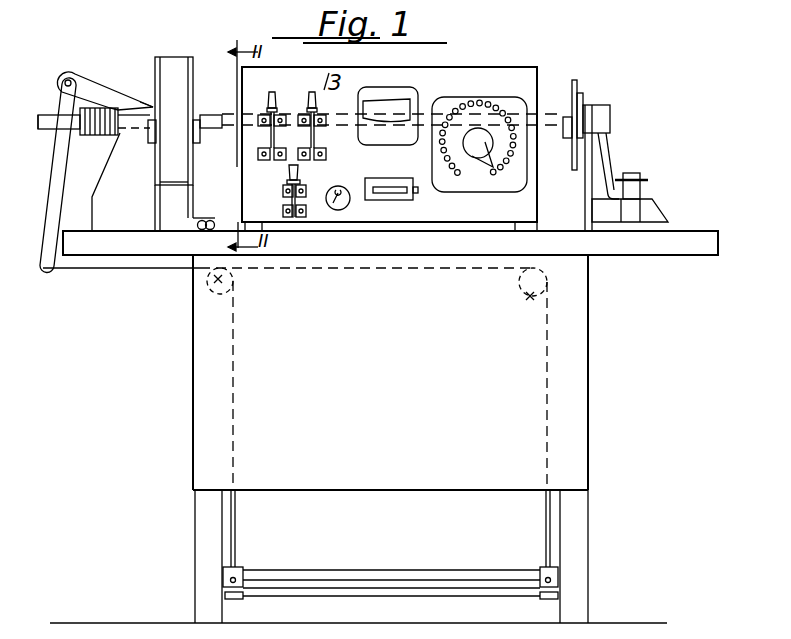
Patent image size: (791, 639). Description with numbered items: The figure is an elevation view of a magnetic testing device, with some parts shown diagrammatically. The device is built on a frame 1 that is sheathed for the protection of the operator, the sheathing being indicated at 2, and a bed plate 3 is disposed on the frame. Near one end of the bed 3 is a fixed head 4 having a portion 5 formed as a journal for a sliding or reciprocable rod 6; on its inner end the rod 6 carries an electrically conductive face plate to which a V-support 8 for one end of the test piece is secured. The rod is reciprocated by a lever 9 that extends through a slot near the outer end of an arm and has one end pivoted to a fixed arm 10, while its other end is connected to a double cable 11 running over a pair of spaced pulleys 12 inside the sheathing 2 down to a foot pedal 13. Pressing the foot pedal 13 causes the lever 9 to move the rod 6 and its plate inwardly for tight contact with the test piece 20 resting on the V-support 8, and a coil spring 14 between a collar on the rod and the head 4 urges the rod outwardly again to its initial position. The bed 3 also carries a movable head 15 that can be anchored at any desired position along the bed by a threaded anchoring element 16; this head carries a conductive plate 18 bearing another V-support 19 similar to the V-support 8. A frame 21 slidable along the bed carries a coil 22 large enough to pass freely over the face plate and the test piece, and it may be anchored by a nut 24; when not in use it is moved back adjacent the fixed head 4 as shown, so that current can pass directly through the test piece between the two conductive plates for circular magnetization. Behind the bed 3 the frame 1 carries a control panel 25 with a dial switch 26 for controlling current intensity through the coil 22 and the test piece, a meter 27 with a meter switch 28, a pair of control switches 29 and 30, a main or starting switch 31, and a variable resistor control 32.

The frame 1 is at (582, 550).
The sheathing 2 is at (574, 375).
The bed plate 3 is at (630, 247).
The fixed head 4 is at (112, 182).
The journal portion 5 is at (133, 110).
The reciprocable rod 6 is at (50, 115).
The V-support 8 is at (196, 138).
The lever 9 is at (53, 180).
The fixed arm 10 is at (90, 92).
The double cable 11 is at (128, 272).
The pulleys 12 is at (232, 284).
The foot pedal 13 is at (360, 588).
The coil spring 14 is at (112, 133).
The movable head 15 is at (598, 175).
The threaded anchoring element 16 is at (630, 187).
The conductive plate 18 is at (576, 88).
The V-support 19 is at (569, 140).
The test piece 20 is at (208, 115).
The frame 21 is at (187, 207).
The coil 22 is at (173, 65).
The nut 24 is at (205, 217).
The control panel 25 is at (462, 80).
The dial switch 26 is at (484, 150).
The meter 27 is at (403, 79).
The meter switch 28 is at (381, 189).
The control switch 29 is at (276, 110).
The control switch 30 is at (314, 100).
The main switch 31 is at (298, 181).
The variable resistor control 32 is at (347, 207).